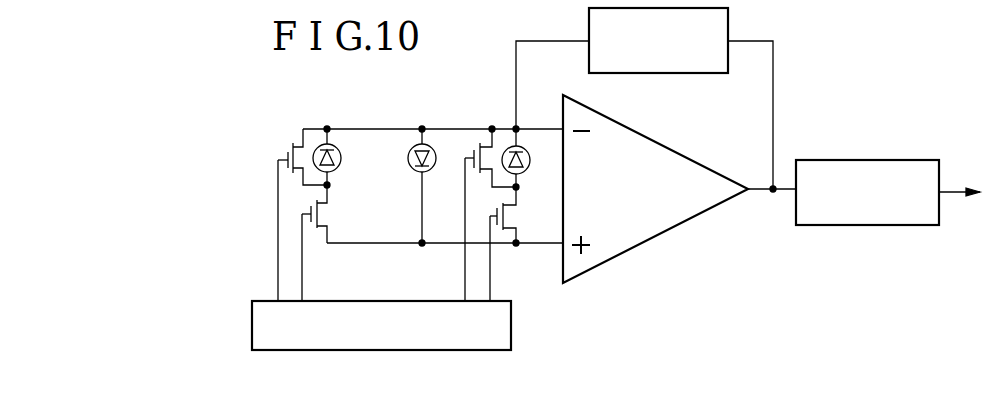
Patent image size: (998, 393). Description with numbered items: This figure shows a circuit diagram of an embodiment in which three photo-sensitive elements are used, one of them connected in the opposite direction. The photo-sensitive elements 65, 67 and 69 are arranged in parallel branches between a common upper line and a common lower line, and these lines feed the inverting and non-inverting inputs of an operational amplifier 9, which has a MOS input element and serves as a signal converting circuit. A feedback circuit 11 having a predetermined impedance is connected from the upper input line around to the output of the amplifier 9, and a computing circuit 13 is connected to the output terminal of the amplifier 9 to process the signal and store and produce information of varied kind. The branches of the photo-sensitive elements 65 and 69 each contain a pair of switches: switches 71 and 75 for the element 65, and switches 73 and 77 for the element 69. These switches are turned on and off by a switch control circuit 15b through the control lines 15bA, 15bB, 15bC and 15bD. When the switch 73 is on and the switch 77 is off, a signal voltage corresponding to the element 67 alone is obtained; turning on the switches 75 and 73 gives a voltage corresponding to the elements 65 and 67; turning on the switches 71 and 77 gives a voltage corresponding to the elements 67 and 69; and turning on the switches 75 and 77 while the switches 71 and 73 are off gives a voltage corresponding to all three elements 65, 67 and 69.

The switch 71 is at (292, 145).
The photo-sensitive element 65 is at (341, 152).
The switch 75 is at (326, 212).
The photo-sensitive element 67 is at (412, 168).
The switch 73 is at (465, 155).
The photo-sensitive element 69 is at (530, 153).
The switch 77 is at (508, 212).
The switch control signal line 15bA is at (275, 298).
The switch control signal line 15bB is at (303, 298).
The switch control signal line 15bC is at (462, 298).
The switch control signal line 15bD is at (490, 298).
The switch control circuit 15b is at (511, 322).
The feedback circuit 11 is at (700, 73).
The operational amplifier 9 is at (690, 222).
The computing circuit 13 is at (883, 160).